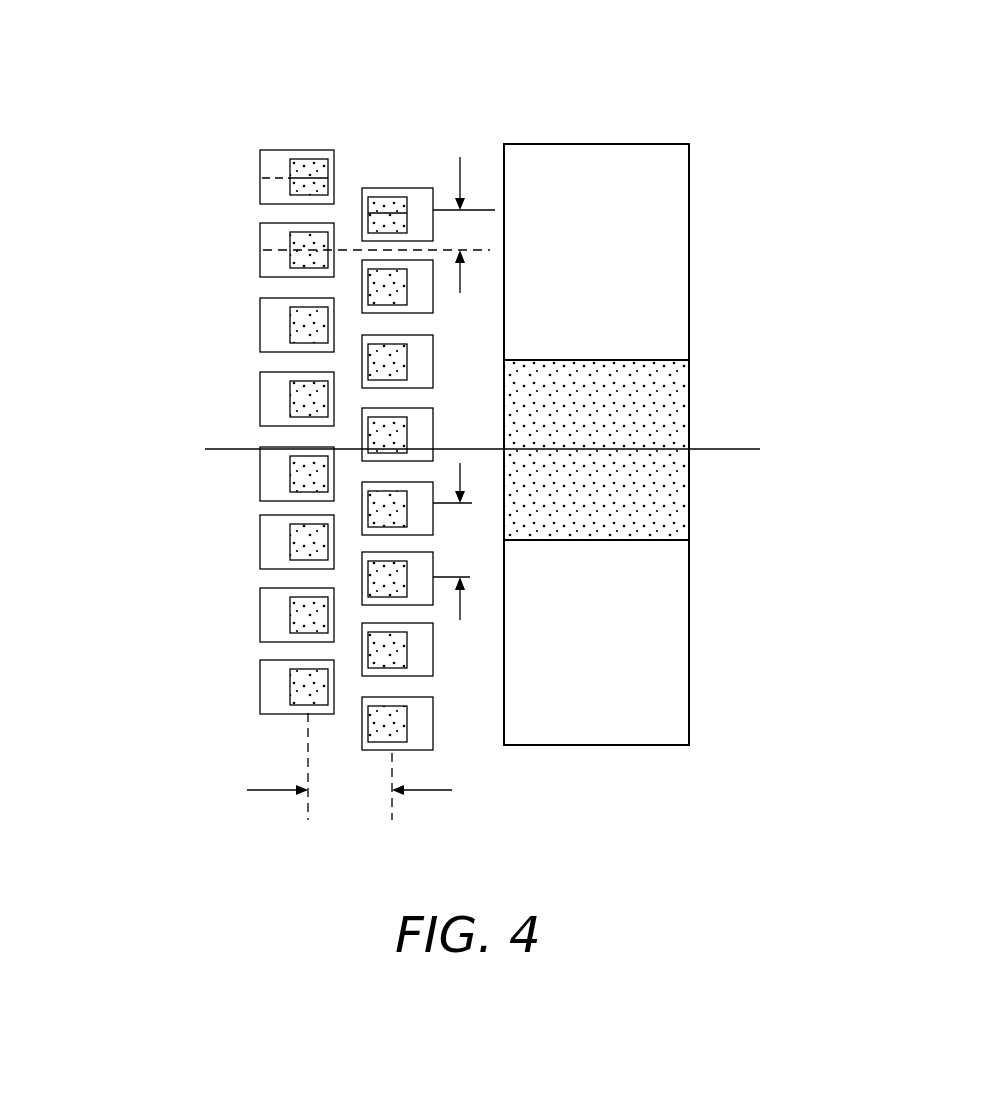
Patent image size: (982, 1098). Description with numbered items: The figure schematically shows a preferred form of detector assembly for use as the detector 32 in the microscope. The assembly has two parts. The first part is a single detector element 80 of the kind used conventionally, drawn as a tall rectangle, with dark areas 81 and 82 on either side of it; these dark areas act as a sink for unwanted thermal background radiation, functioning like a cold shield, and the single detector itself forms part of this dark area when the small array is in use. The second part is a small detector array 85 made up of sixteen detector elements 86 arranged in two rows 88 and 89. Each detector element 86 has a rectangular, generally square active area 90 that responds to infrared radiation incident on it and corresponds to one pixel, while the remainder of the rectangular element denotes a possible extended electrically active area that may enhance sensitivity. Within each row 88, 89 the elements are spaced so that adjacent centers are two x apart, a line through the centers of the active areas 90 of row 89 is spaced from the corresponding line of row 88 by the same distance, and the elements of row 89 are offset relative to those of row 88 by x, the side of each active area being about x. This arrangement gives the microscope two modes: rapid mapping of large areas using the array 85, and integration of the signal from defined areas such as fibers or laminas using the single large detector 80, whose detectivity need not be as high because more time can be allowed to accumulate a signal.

The detector 32 is at (472, 31).
The single detector element 80 is at (672, 413).
The dark area 81 is at (665, 222).
The dark area 82 is at (668, 660).
The detector array 85 is at (212, 325).
The detector element 86 is at (430, 186).
The row 88 is at (295, 128).
The row 89 is at (390, 165).
The active area 90 is at (296, 392).